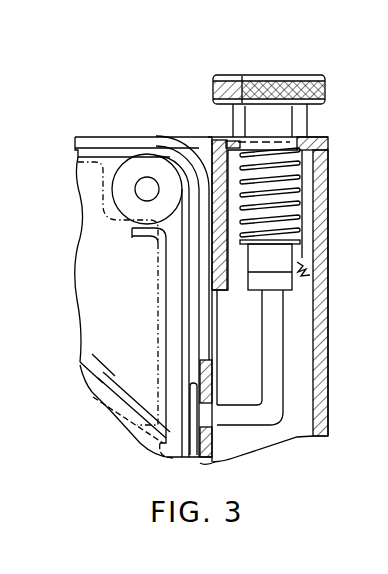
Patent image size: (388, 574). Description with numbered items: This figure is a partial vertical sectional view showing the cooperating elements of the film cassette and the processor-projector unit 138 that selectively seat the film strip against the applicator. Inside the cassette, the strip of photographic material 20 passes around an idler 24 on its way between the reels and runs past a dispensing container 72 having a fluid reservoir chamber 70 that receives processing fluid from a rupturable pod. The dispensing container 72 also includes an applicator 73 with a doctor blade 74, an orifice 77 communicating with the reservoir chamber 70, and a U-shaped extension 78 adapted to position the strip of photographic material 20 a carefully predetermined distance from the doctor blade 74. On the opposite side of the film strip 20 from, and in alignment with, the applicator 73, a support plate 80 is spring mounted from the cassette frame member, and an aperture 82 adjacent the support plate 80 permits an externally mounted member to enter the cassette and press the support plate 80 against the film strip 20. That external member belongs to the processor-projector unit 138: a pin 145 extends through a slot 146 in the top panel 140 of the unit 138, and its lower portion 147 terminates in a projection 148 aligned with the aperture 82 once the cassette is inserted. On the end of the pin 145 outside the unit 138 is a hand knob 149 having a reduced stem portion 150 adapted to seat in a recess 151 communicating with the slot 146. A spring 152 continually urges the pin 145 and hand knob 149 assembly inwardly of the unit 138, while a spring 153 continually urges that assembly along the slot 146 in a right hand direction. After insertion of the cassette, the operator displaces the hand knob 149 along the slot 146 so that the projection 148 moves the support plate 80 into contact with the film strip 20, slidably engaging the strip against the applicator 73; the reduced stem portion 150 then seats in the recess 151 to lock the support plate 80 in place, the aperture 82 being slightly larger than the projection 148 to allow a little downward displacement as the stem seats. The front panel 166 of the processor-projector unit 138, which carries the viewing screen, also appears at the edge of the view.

The strip of photographic material 20 is at (103, 143).
The idler 24 is at (143, 160).
The fluid reservoir chamber 70 is at (105, 400).
The dispensing container 72 is at (125, 282).
The applicator 73 is at (197, 464).
The doctor blade 74 is at (130, 437).
The orifice 77 is at (167, 460).
The U-shaped extension 78 is at (212, 360).
The support plate 80 is at (175, 405).
The aperture 82 is at (218, 403).
The processor-projector unit 138 is at (333, 160).
The top panel 140 is at (320, 132).
The pin 145 is at (298, 190).
The slot 146 is at (210, 137).
The lower portion 147 is at (280, 330).
The projection 148 is at (235, 418).
The hand knob 149 is at (298, 80).
The reduced stem portion 150 is at (303, 122).
The recess 151 is at (224, 141).
The spring 152 is at (300, 215).
The spring 153 is at (307, 264).
The front panel 166 is at (387, 427).